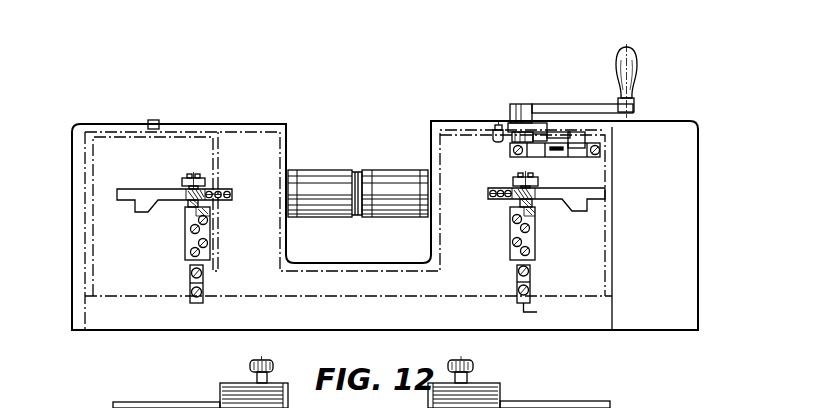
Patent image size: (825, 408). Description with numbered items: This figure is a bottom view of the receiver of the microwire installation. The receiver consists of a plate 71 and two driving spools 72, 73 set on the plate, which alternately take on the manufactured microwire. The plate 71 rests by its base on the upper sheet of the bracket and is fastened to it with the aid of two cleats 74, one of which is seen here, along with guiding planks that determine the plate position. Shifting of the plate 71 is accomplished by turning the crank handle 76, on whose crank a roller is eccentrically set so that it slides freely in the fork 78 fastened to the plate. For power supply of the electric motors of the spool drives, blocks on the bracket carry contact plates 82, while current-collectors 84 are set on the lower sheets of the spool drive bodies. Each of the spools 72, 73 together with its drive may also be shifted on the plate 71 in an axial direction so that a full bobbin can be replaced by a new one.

The plate 71 is at (680, 298).
The driving spool 72 is at (323, 188).
The driving spool 73 is at (380, 188).
The cleat 74 is at (530, 278).
The crank handle 76 is at (536, 107).
The fork 78 is at (578, 136).
The contact plate 82 is at (185, 237).
The current-collector 84 is at (508, 188).